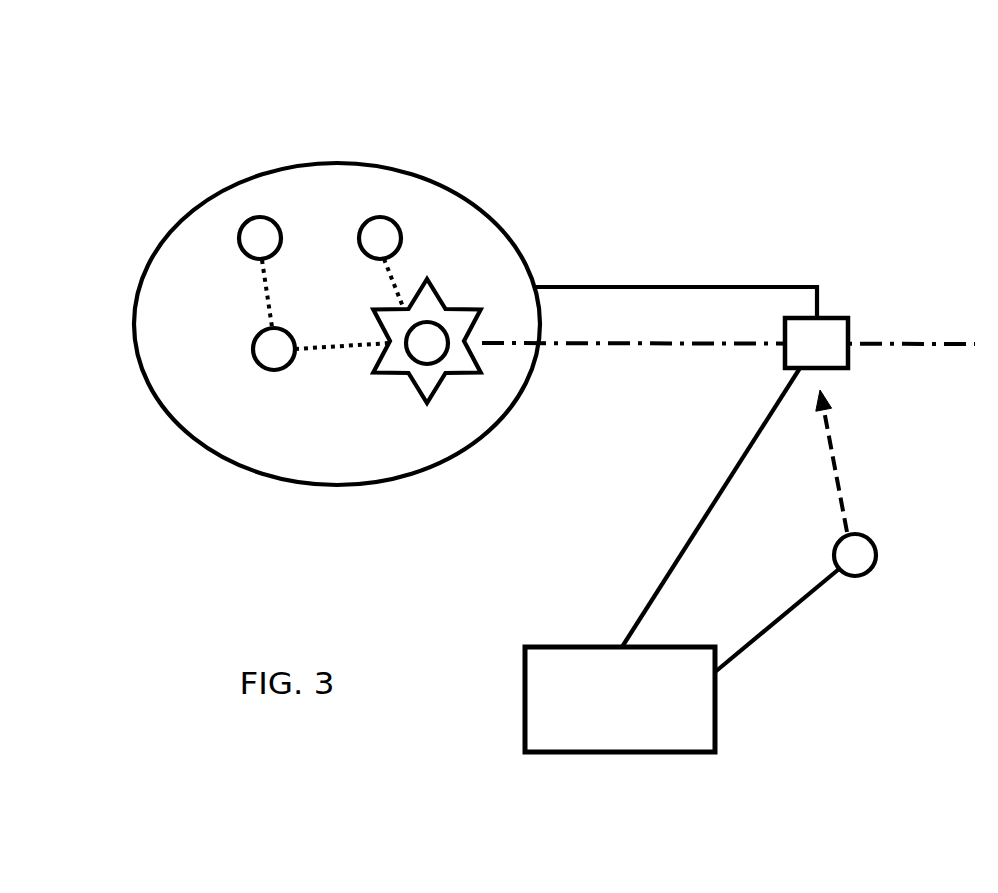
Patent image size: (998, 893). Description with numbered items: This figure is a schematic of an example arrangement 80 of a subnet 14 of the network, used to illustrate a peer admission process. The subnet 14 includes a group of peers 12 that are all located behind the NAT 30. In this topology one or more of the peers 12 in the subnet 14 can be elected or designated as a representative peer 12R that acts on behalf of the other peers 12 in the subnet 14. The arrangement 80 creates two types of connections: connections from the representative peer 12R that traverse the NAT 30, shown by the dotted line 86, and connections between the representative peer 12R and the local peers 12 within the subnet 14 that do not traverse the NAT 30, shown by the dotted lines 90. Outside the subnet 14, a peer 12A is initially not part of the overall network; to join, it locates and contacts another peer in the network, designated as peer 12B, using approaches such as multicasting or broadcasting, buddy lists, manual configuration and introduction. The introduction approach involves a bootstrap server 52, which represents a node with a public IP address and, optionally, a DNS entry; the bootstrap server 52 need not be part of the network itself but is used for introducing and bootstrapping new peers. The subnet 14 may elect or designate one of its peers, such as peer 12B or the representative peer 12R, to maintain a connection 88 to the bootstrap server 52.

The subnet 14 is at (222, 190).
The peers 12 is at (268, 218).
The dotted lines 90 is at (331, 346).
The peer 12B is at (263, 372).
The representative peer 12R is at (394, 366).
The arrangement 80 is at (645, 149).
The NAT 30 is at (832, 318).
The dotted line 86 is at (618, 345).
The connection 88 is at (673, 563).
The peer 12A is at (876, 536).
The bootstrap server 52 is at (715, 698).